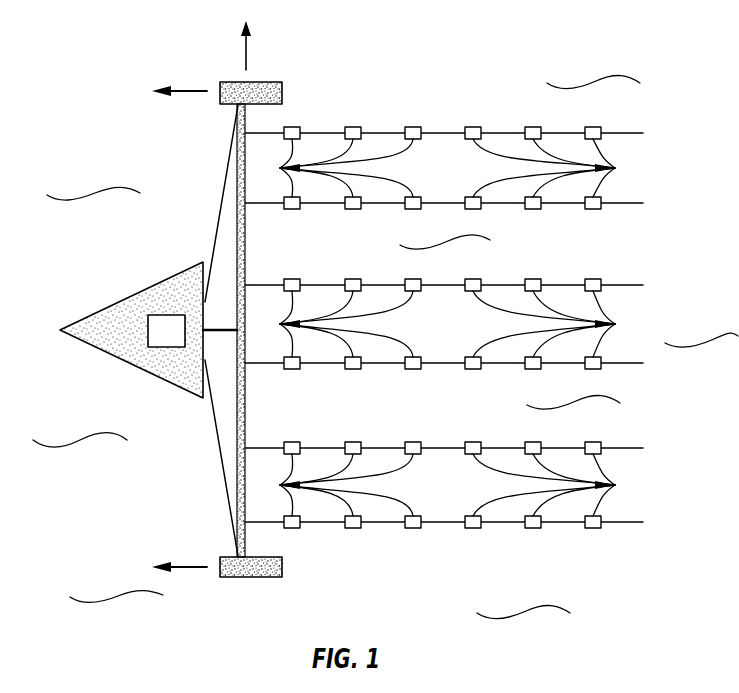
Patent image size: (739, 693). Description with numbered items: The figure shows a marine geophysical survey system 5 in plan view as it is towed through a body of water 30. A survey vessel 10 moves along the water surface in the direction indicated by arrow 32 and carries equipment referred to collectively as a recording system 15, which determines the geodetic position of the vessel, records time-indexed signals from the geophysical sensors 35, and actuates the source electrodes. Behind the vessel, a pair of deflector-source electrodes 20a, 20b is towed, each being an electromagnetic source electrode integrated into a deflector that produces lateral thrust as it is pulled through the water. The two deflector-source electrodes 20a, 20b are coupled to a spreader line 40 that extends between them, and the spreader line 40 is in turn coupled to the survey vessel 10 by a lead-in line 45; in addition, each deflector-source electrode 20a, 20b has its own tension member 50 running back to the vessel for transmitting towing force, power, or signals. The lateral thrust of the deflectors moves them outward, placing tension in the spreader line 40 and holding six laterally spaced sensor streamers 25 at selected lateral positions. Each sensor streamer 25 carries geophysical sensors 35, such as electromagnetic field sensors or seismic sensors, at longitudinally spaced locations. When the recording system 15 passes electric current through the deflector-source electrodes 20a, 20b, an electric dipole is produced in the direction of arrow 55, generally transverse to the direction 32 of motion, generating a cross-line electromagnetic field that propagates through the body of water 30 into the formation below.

The marine geophysical survey system 5 is at (102, 92).
The survey vessel 10 is at (98, 312).
The recording system 15 is at (178, 343).
The first deflector-source electrode 20a is at (265, 82).
The second deflector-source electrode 20b is at (250, 578).
The sensor streamer 25 is at (323, 133).
The body of water 30 is at (516, 94).
The direction of motion arrow 32 is at (178, 90).
The geophysical sensor 35 is at (449, 327).
The spreader line 40 is at (238, 188).
The lead-in line 45 is at (218, 335).
The tension member 50 is at (212, 234).
The electric dipole direction arrow 55 is at (247, 52).